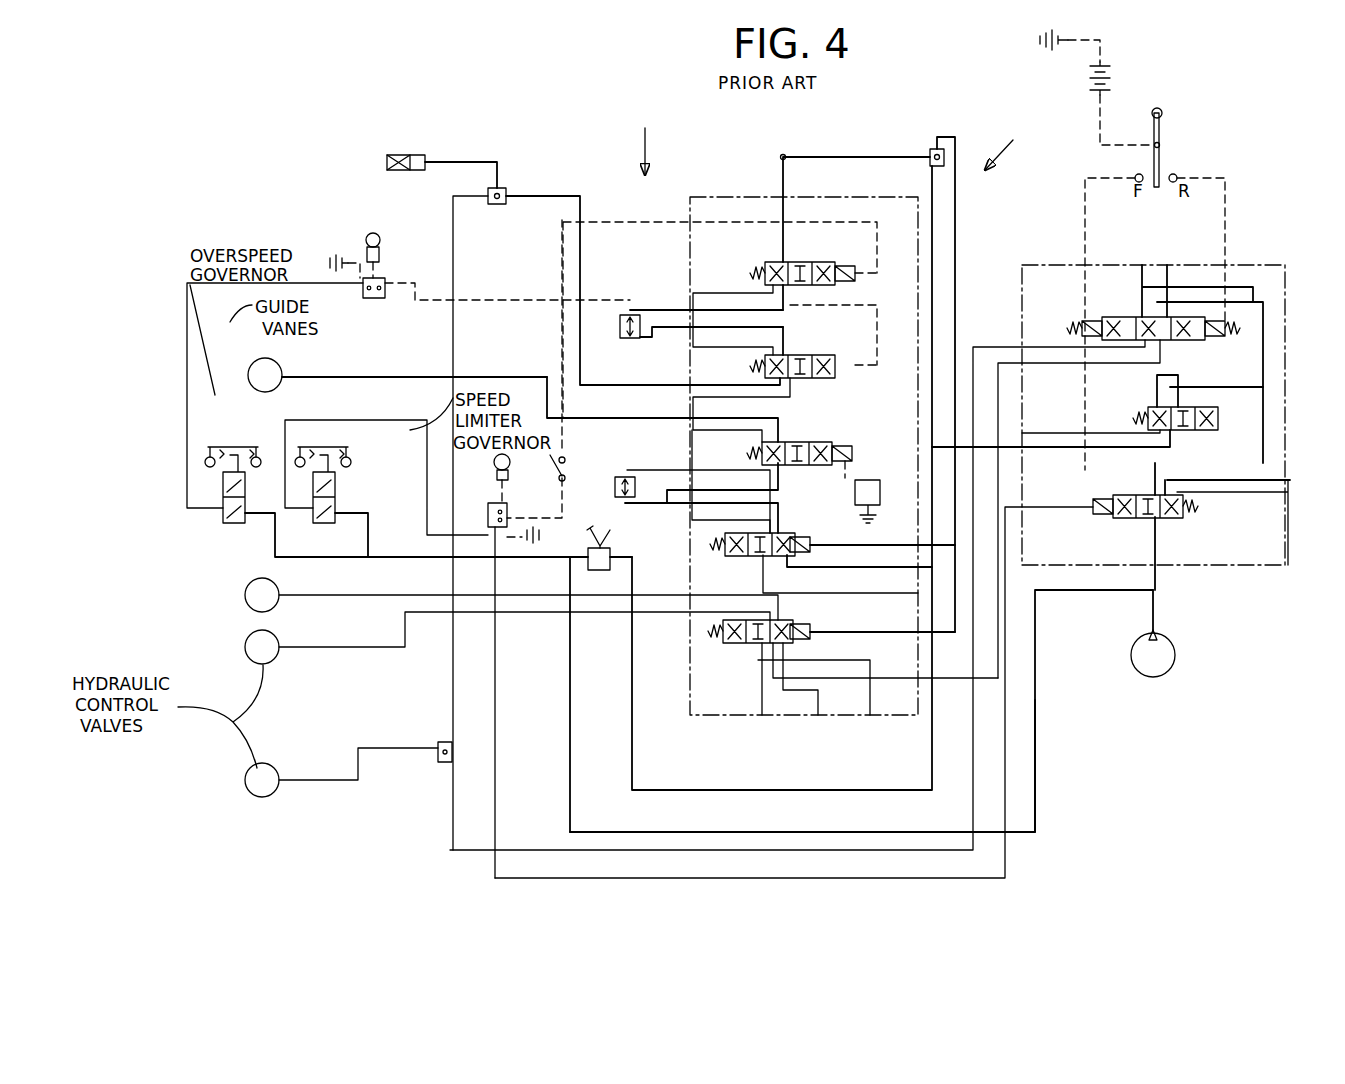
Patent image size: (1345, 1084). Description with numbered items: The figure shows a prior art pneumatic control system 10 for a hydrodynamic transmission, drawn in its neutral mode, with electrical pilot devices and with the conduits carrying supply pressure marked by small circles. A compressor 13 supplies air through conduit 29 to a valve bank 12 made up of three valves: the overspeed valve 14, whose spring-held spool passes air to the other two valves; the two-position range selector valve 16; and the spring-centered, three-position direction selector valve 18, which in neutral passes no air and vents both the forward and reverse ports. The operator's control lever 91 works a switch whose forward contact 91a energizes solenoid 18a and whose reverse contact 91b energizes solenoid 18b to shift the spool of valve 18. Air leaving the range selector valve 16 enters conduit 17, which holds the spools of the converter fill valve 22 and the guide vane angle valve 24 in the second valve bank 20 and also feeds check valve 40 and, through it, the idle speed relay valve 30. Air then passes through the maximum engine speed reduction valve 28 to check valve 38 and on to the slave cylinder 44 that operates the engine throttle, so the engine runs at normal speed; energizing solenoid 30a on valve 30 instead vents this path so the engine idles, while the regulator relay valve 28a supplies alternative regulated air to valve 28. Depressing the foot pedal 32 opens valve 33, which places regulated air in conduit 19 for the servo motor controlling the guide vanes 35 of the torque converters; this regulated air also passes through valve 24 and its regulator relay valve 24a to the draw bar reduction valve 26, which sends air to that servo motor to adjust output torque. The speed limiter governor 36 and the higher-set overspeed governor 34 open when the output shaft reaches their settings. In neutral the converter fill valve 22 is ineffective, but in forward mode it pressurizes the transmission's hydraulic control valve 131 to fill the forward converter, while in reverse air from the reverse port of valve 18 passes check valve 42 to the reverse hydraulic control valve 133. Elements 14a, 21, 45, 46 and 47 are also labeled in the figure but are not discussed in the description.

The control system 10 is at (1009, 142).
The valve bank 12 is at (1258, 265).
The compressor 13 is at (1170, 645).
The overspeed valve 14 is at (1180, 515).
The solenoid of control valve 14a is at (1103, 520).
The range selector valve 16 is at (1218, 418).
The conduit 17 is at (1055, 455).
The direction selector valve 18 is at (1200, 342).
The solenoid 18a is at (1085, 316).
The solenoid 18b is at (1232, 318).
The conduit 19 is at (933, 208).
The valve bank 20 is at (750, 195).
The electric line 21 is at (845, 157).
The converter fill valve 22 is at (790, 625).
The converter guide vane angle valve 24 is at (790, 535).
The regulator relay valve 24a is at (615, 482).
The draw bar reduction valve 26 is at (815, 442).
The maximum engine speed reduction valve 28 is at (812, 355).
The maximum engine speed reduction regulator relay valve 28a is at (620, 333).
The conduit 29 is at (1040, 740).
The idle speed relay valve 30 is at (820, 262).
The solenoid 30a is at (852, 283).
The foot pedal 32 is at (613, 541).
The valve 33 is at (601, 690).
The overspeed governor 34 is at (233, 440).
The guide vanes 35 is at (262, 360).
The speed limiter governor 36 is at (358, 447).
The check valve 38 is at (500, 205).
The check valve 40 is at (932, 150).
The check valve 42 is at (436, 764).
The slave cylinder 44 is at (400, 155).
The relay 45 is at (380, 298).
The hydraulic system 46 is at (656, 122).
The indicator lamp 47 is at (367, 232).
The control lever 91 is at (1163, 131).
The electric switch contact 91a is at (1137, 175).
The electric switch contact 91b is at (1178, 176).
The hydraulic control valve 131 is at (250, 663).
The reverse hydraulic control valve 133 is at (255, 772).